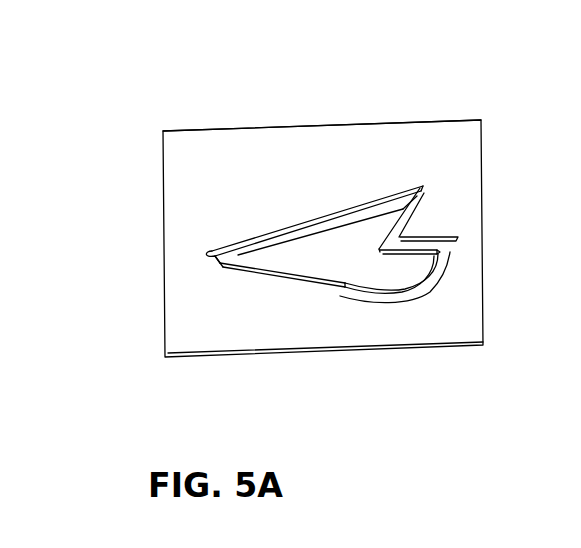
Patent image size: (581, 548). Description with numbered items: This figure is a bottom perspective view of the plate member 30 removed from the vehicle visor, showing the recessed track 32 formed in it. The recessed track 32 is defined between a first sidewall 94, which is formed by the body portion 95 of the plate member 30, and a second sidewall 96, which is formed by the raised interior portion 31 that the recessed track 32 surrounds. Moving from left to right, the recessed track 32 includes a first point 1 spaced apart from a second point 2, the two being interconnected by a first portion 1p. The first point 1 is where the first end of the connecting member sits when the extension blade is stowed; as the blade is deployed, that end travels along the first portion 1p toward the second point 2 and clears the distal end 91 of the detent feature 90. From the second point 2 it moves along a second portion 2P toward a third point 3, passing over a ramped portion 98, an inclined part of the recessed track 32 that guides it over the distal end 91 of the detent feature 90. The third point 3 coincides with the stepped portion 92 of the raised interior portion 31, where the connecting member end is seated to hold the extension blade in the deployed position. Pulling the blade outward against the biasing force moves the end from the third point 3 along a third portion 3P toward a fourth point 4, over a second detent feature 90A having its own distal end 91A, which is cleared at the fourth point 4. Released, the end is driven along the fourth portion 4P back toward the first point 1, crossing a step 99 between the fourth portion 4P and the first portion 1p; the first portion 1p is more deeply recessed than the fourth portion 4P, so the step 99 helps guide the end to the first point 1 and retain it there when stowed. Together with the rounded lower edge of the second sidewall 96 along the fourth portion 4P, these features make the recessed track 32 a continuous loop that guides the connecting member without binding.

The plate member 30 is at (295, 117).
The recessed track 32 is at (256, 227).
The first portion 1p is at (308, 222).
The detent feature 90 is at (380, 224).
The distal end 91 is at (397, 208).
The body portion 95 is at (417, 140).
The second point 2 is at (423, 184).
The ramped portion 98 is at (422, 204).
The second portion 2P is at (400, 231).
The third portion 3P is at (404, 237).
The fourth point 4 is at (455, 243).
The distal end 91A is at (436, 256).
The second detent feature 90A is at (438, 256).
The third point 3 is at (410, 256).
The stepped portion 92 is at (378, 252).
The raised interior portion 31 is at (358, 270).
The second sidewall 96 is at (323, 276).
The fourth portion 4P is at (284, 275).
The first sidewall 94 is at (240, 250).
The first point 1 is at (218, 258).
The step 99 is at (237, 263).